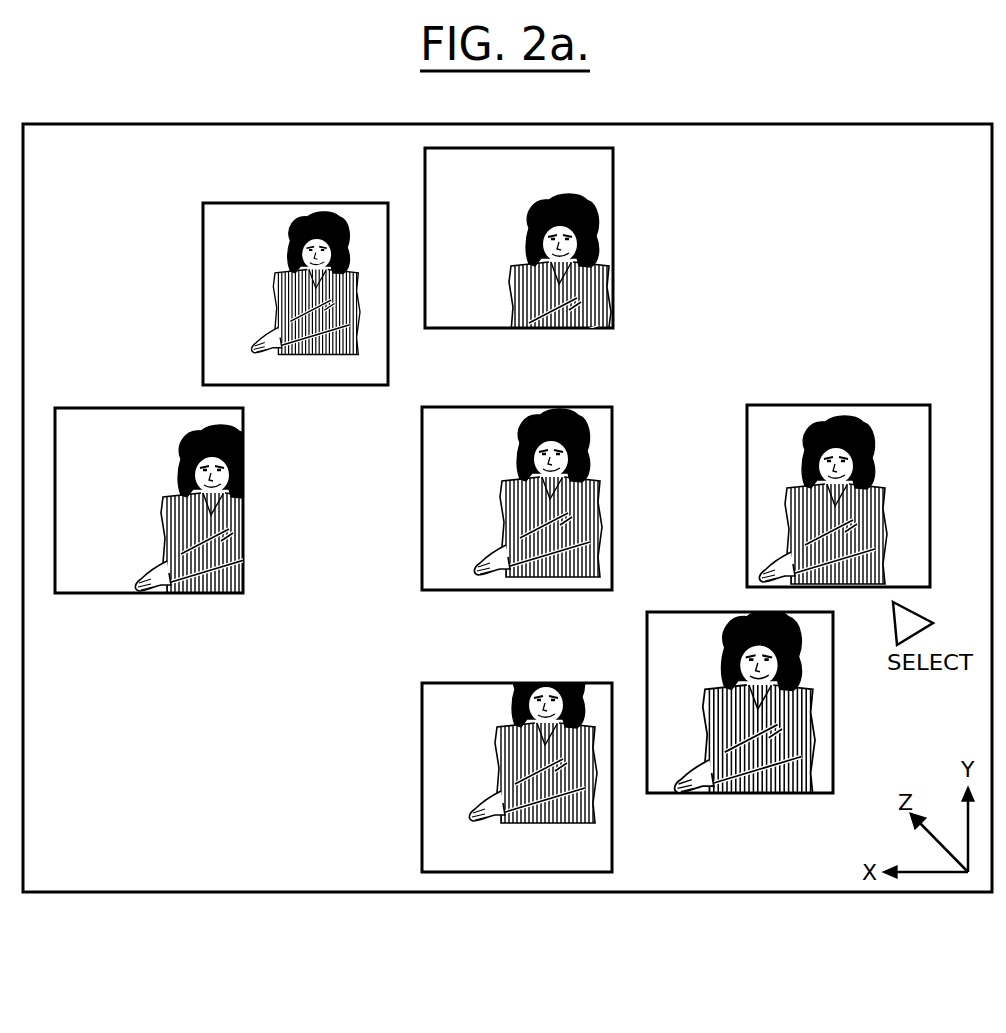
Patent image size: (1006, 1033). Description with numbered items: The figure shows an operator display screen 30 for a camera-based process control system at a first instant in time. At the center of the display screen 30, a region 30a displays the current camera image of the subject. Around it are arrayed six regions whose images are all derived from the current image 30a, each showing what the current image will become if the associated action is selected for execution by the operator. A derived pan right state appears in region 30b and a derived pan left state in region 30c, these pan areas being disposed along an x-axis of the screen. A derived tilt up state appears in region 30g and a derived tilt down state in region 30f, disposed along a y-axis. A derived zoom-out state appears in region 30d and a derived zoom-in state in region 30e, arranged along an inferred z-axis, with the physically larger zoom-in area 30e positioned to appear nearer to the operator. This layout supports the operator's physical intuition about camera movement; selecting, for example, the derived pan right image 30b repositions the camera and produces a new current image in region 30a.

The display screen 30 is at (920, 176).
The current image region 30a is at (517, 525).
The derived pan right region 30b is at (840, 470).
The derived pan left region 30c is at (159, 525).
The derived zoom-out region 30d is at (309, 319).
The derived zoom-in region 30e is at (740, 727).
The derived tilt down region 30f is at (443, 768).
The derived tilt up region 30g is at (519, 262).